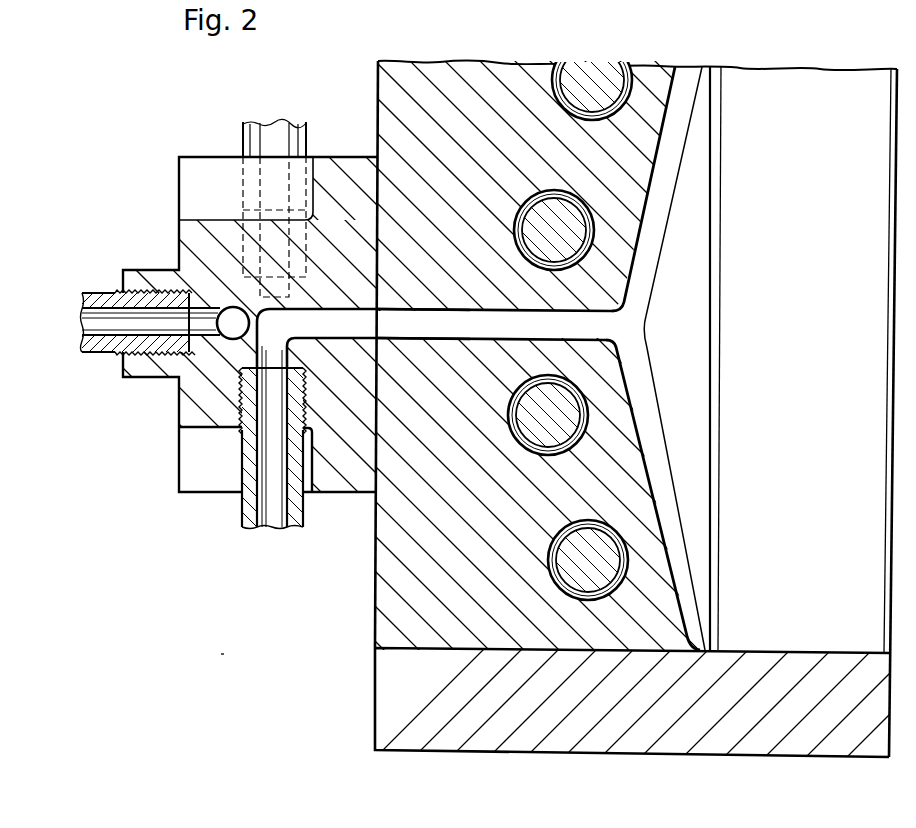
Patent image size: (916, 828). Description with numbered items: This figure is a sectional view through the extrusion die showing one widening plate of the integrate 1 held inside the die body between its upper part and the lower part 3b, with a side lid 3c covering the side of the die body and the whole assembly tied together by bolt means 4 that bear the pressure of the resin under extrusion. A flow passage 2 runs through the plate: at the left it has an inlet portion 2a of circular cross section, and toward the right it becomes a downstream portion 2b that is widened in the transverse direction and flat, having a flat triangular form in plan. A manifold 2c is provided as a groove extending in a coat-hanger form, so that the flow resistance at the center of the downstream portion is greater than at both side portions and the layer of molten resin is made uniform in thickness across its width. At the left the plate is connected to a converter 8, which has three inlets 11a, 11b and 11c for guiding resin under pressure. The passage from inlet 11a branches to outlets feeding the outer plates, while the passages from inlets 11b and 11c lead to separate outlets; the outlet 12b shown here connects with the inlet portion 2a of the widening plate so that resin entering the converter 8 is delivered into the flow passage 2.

The integrate 1 is at (462, 527).
The flow passage 2 is at (515, 338).
The inlet portion 2a is at (391, 338).
The downstream portion 2b is at (703, 130).
The manifold 2c is at (678, 117).
The lower part 3b is at (799, 408).
The side lid 3c is at (668, 718).
The bolt means 4 is at (553, 222).
The converter 8 is at (345, 482).
The inlet 11a is at (83, 330).
The inlet 11b is at (267, 528).
The inlet 11c is at (273, 128).
The outlet 12b is at (340, 338).